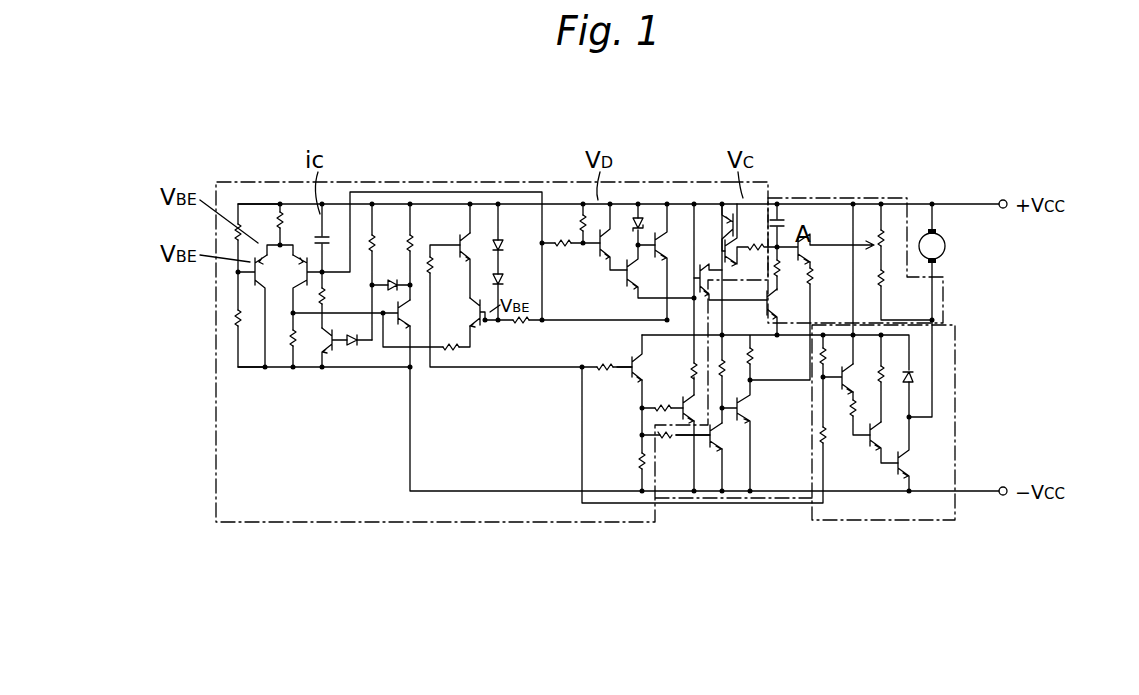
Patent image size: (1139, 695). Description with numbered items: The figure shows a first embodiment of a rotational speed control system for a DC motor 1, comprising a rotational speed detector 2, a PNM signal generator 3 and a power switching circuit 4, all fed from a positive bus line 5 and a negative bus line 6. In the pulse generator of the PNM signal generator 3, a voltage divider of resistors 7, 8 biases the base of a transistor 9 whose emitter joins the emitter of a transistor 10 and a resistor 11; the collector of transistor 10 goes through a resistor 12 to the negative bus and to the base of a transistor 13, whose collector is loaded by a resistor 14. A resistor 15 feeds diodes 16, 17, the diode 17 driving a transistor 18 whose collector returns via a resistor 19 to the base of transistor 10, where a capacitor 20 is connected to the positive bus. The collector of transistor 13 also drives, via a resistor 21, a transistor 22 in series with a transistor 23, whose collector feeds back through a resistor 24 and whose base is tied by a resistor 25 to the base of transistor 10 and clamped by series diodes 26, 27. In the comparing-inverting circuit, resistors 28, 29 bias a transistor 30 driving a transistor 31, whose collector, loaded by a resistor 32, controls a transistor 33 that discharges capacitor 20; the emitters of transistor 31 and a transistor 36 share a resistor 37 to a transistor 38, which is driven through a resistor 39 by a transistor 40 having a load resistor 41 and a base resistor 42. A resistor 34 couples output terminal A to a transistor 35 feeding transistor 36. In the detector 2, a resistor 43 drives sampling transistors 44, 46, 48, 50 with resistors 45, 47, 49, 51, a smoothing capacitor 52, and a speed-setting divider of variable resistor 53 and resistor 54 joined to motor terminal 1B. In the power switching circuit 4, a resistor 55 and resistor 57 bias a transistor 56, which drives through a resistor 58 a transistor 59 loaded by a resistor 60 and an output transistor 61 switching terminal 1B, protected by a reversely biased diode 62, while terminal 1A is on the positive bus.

The DC motor 1 is at (947, 247).
The terminal of the DC motor 1A is at (937, 231).
The terminal of the DC motor 1B is at (937, 262).
The rotational speed detector 2 is at (783, 198).
The PNM signal generator 3 is at (298, 182).
The power switching circuit 4 is at (813, 520).
The positive bus line 5 is at (265, 204).
The negative bus line 6 is at (253, 368).
The resistor 7 is at (232, 236).
The resistor 8 is at (240, 328).
The transistor 9 is at (259, 281).
The transistor 10 is at (300, 284).
The resistor 11 is at (284, 221).
The resistor 12 is at (290, 336).
The transistor 13 is at (401, 326).
The resistor 14 is at (413, 240).
The resistor 15 is at (386, 230).
The diode 16 is at (391, 284).
The diode 17 is at (352, 345).
The transistor 18 is at (318, 345).
The resistor 19 is at (326, 296).
The capacitor 20 is at (331, 240).
The resistor 21 is at (434, 270).
The transistor 22 is at (472, 231).
The transistor 23 is at (476, 330).
The resistor 24 is at (450, 347).
The resistor 25 is at (521, 326).
The diode 26 is at (502, 243).
The diode 27 is at (502, 278).
The resistor 28 is at (562, 246).
The resistor 29 is at (580, 224).
The transistor 30 is at (603, 262).
The transistor 31 is at (614, 290).
The resistor 32 is at (640, 214).
The transistor 33 is at (661, 259).
The resistor 34 is at (746, 212).
The transistor 35 is at (739, 251).
The transistor 36 is at (716, 283).
The resistor 37 is at (690, 370).
The transistor 38 is at (683, 400).
The resistor 39 is at (650, 410).
The transistor 40 is at (630, 373).
The resistor 41 is at (642, 462).
The resistor 42 is at (600, 366).
The resistor 43 is at (668, 444).
The transistor 44 is at (726, 445).
The resistor 45 is at (722, 345).
The transistor 46 is at (753, 425).
The resistor 47 is at (766, 350).
The transistor 48 is at (780, 300).
The resistor 49 is at (809, 282).
The transistor 50 is at (812, 251).
The resistor 51 is at (781, 276).
The capacitor 52 is at (790, 223).
The variable resistor 53 is at (890, 243).
The resistor 54 is at (885, 286).
The resistor 55 is at (824, 442).
The transistor 56 is at (860, 350).
The resistor 57 is at (823, 360).
The resistor 58 is at (852, 412).
The transistor 59 is at (883, 436).
The resistor 60 is at (884, 350).
The transistor 61 is at (912, 466).
The diode 62 is at (915, 376).